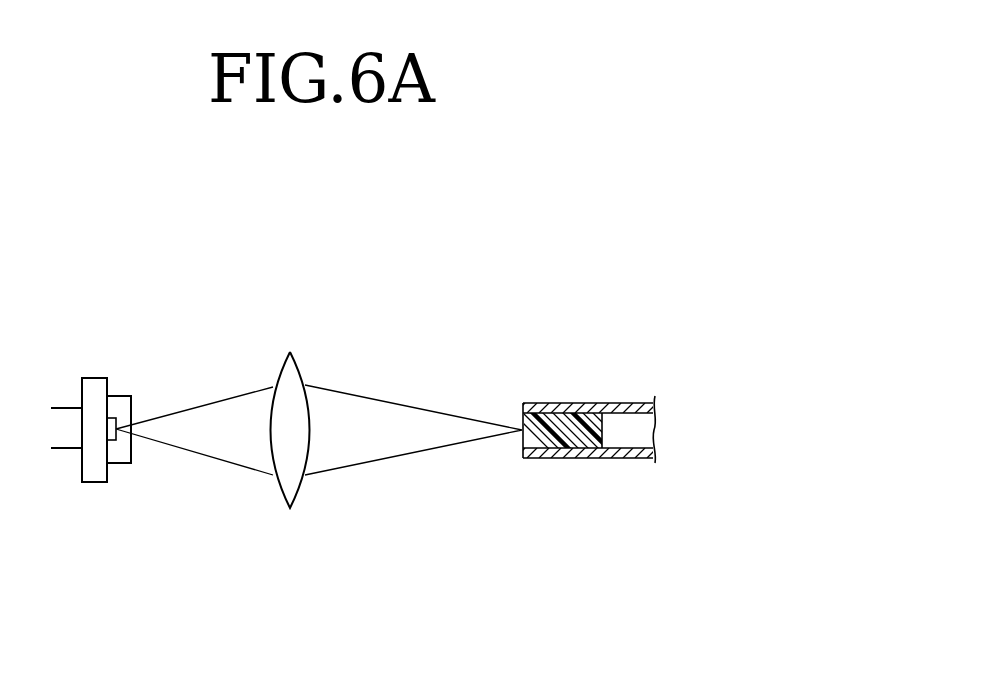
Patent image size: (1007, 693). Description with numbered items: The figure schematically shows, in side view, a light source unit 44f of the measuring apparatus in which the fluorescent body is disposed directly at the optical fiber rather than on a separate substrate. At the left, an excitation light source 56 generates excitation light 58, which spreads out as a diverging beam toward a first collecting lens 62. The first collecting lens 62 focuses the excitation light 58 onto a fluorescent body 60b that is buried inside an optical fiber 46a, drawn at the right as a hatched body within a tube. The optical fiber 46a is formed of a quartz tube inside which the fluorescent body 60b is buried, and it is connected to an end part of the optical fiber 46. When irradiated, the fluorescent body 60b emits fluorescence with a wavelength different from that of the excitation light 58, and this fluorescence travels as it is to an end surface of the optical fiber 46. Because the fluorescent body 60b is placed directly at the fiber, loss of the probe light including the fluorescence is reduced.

The light source unit 44f is at (221, 259).
The excitation light source 56 is at (94, 369).
The excitation light 58 is at (213, 410).
The first collecting lens 62 is at (276, 505).
The optical fiber 46 is at (635, 398).
The optical fiber 46a is at (578, 403).
The fluorescent body 60b is at (575, 446).